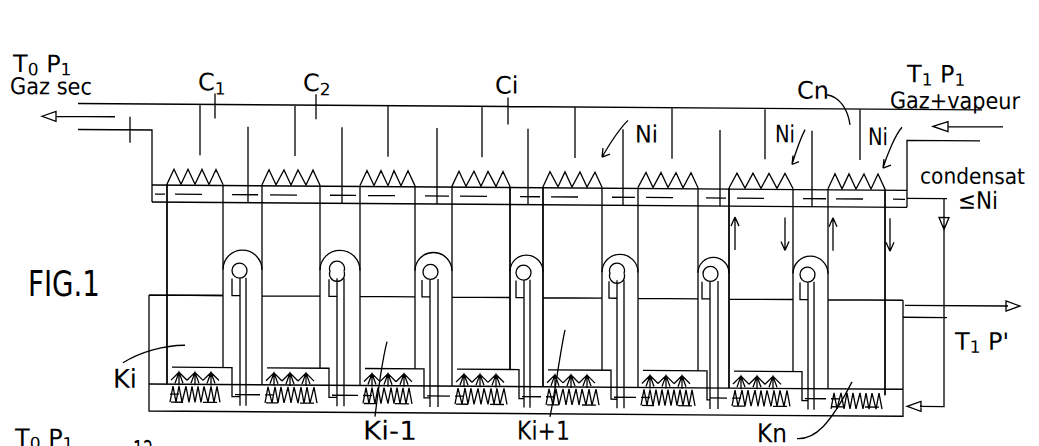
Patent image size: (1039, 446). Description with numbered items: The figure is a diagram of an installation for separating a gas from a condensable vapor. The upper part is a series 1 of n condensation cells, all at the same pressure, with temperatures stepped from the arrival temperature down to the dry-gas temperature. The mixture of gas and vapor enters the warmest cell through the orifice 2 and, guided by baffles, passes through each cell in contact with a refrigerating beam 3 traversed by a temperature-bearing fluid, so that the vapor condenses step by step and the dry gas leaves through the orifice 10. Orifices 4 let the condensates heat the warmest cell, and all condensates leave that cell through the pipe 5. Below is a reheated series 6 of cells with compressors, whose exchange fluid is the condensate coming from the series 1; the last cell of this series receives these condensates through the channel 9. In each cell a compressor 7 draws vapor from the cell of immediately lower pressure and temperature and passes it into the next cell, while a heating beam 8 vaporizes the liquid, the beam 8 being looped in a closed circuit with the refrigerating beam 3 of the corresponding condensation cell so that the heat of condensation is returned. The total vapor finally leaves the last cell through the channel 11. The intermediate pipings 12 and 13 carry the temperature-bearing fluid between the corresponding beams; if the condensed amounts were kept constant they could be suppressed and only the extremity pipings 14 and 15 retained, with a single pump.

The series of condensation cells 1 is at (632, 104).
The orifice 2 is at (923, 120).
The refrigerating beam 3 is at (464, 171).
The orifices 4 is at (730, 188).
The pipe 5 is at (920, 193).
The reheated series with compressors 6 is at (607, 413).
The compressor 7 is at (467, 258).
The heating beam 8 is at (480, 401).
The channel 9 is at (935, 403).
The orifice 10 is at (97, 156).
The channel 11 is at (950, 302).
The piping 12 is at (510, 232).
The piping 13 is at (543, 231).
The extremity piping 14 is at (887, 257).
The extremity piping 15 is at (166, 243).